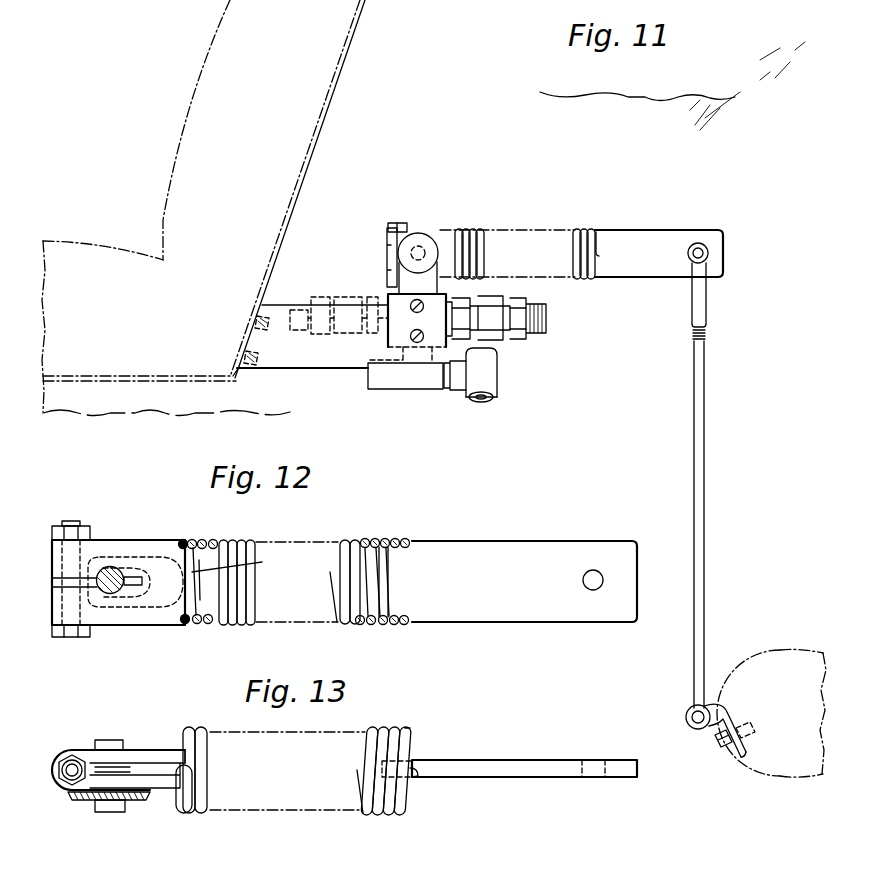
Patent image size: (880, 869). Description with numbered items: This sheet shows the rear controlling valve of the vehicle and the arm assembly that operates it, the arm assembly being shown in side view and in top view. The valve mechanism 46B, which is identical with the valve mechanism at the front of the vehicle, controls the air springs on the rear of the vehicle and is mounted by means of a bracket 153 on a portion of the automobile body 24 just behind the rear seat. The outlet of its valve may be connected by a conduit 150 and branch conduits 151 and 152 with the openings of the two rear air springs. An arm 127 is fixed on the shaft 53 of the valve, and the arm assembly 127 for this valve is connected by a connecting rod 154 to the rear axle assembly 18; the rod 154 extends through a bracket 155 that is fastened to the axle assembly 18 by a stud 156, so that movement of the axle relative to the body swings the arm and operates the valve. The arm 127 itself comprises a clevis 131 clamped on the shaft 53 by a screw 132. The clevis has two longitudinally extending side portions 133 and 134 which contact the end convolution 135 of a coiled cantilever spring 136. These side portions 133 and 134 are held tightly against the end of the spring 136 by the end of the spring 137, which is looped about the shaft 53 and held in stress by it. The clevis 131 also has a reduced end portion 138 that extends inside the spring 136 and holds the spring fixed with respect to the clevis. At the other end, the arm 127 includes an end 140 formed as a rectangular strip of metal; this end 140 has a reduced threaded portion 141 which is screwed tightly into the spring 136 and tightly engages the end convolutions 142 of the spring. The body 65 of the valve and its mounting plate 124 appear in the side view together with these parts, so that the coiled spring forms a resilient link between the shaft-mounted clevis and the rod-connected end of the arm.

In FIG. 11, the rear axle assembly 18 is at (803, 639).
In FIG. 11, the automobile body 24 is at (682, 95).
In FIG. 11, the valve mechanism 46B is at (372, 292).
In FIG. 11, the shaft 53 is at (420, 247).
In FIG. 12, the shaft 53 is at (112, 594).
In FIG. 13, the shaft 53 is at (104, 812).
In FIG. 11, the valve body 65 is at (412, 390).
In FIG. 11, the mounting plate 124 is at (366, 378).
In FIG. 11, the arm 127 is at (582, 220).
In FIG. 12, the arm 127 is at (497, 531).
In FIG. 13, the arm 127 is at (532, 756).
In FIG. 12, the clevis 131 is at (158, 620).
In FIG. 13, the clevis 131 is at (87, 747).
In FIG. 12, the screw 132 is at (70, 521).
In FIG. 13, the screw 132 is at (72, 776).
In FIG. 13, the side portion 133 is at (163, 790).
In FIG. 13, the side portion 134 is at (161, 752).
In FIG. 12, the end convolution 135 is at (184, 540).
In FIG. 13, the end convolution 135 is at (187, 813).
In FIG. 12, the coiled cantilever spring 136 is at (345, 540).
In FIG. 13, the coiled cantilever spring 136 is at (364, 816).
In FIG. 12, the end of the spring 137 is at (113, 556).
In FIG. 13, the end of the spring 137 is at (130, 768).
In FIG. 12, the reduced end portion 138 is at (241, 568).
In FIG. 11, the end 140 is at (712, 237).
In FIG. 12, the end 140 is at (607, 615).
In FIG. 13, the end 140 is at (622, 778).
In FIG. 12, the reduced threaded portion 141 is at (398, 548).
In FIG. 13, the reduced threaded portion 141 is at (414, 777).
In FIG. 12, the end convolutions 142 is at (397, 539).
In FIG. 13, the end convolutions 142 is at (403, 733).
In FIG. 11, the conduit 150 is at (498, 372).
In FIG. 11, the branch conduit 151 is at (492, 352).
In FIG. 11, the branch conduit 152 is at (494, 394).
In FIG. 11, the bracket 153 is at (268, 338).
In FIG. 11, the connecting rod 154 is at (706, 432).
In FIG. 11, the bracket 155 is at (712, 704).
In FIG. 11, the stud 156 is at (722, 750).